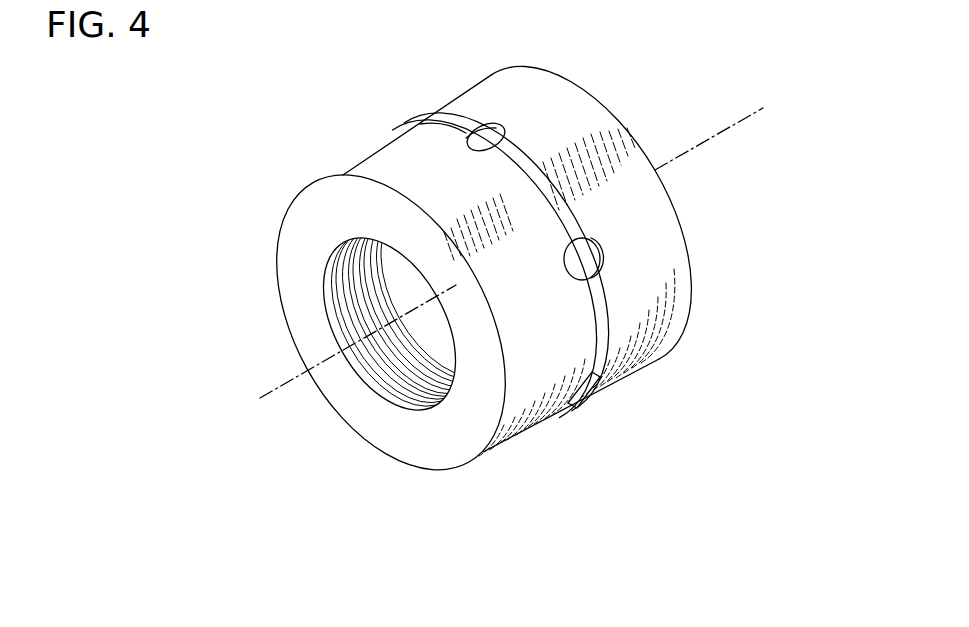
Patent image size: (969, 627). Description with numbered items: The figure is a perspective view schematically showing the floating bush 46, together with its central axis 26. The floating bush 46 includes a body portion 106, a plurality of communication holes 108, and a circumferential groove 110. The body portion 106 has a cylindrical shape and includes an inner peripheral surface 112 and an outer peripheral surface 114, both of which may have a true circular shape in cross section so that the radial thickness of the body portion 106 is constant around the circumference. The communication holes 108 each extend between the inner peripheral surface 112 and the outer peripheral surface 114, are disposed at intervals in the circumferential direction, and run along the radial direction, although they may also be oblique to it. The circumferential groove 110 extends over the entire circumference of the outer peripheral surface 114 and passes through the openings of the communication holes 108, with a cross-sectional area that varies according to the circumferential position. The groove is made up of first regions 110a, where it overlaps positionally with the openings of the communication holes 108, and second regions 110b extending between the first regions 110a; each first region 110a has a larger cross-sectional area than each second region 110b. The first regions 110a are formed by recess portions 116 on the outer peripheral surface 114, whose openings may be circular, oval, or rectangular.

The floating bush 46 is at (622, 79).
The body portion 106 is at (551, 73).
The outer peripheral surface 114 is at (393, 150).
The inner peripheral surface 112 is at (410, 285).
The central axis 26 is at (293, 378).
The circumferential groove 110 is at (440, 121).
The second region 110b is at (517, 152).
The communication hole 108 is at (472, 121).
The first region 110a is at (487, 125).
The recess portion 116 is at (600, 240).